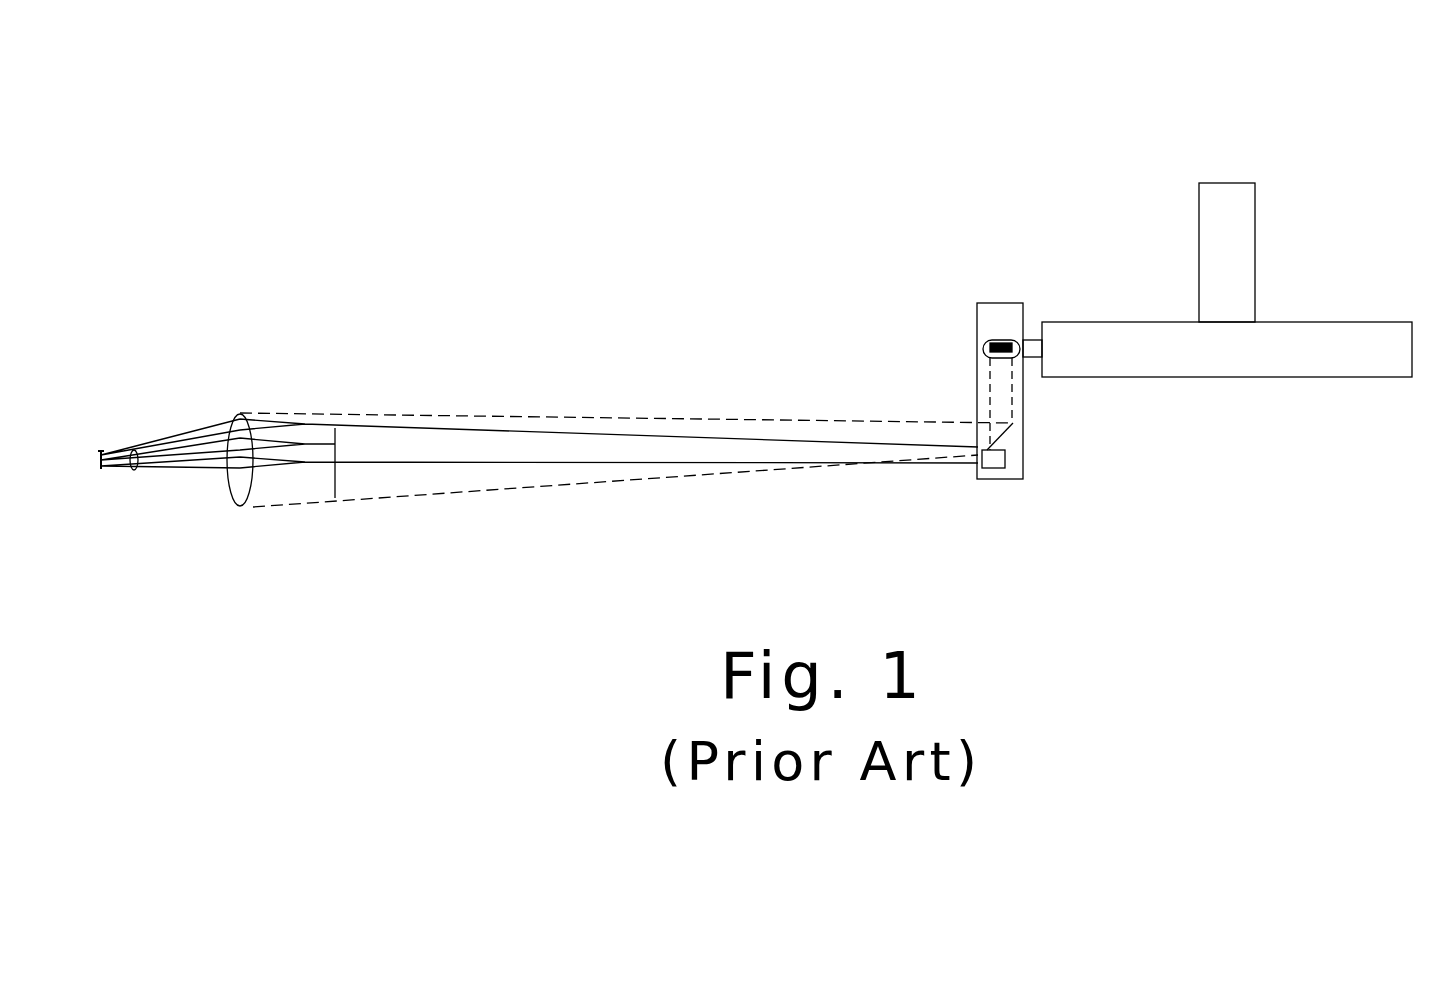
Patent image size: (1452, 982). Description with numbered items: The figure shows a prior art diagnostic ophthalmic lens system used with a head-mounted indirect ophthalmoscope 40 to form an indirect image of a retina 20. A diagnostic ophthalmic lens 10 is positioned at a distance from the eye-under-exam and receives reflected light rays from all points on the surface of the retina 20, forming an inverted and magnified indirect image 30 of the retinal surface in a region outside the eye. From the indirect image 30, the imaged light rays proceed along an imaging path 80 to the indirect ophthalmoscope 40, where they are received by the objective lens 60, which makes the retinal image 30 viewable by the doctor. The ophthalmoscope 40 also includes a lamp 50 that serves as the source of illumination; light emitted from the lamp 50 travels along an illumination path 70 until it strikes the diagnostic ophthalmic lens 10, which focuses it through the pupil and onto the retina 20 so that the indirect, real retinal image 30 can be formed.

The diagnostic ophthalmic lens 10 is at (240, 413).
The retina 20 is at (101, 470).
The indirect image 30 is at (336, 491).
The indirect ophthalmoscope 40 is at (1443, 337).
The lamp 50 is at (1005, 340).
The objective lens 60 is at (1000, 480).
The illumination path 70 is at (1000, 400).
The imaging path 80 is at (575, 437).